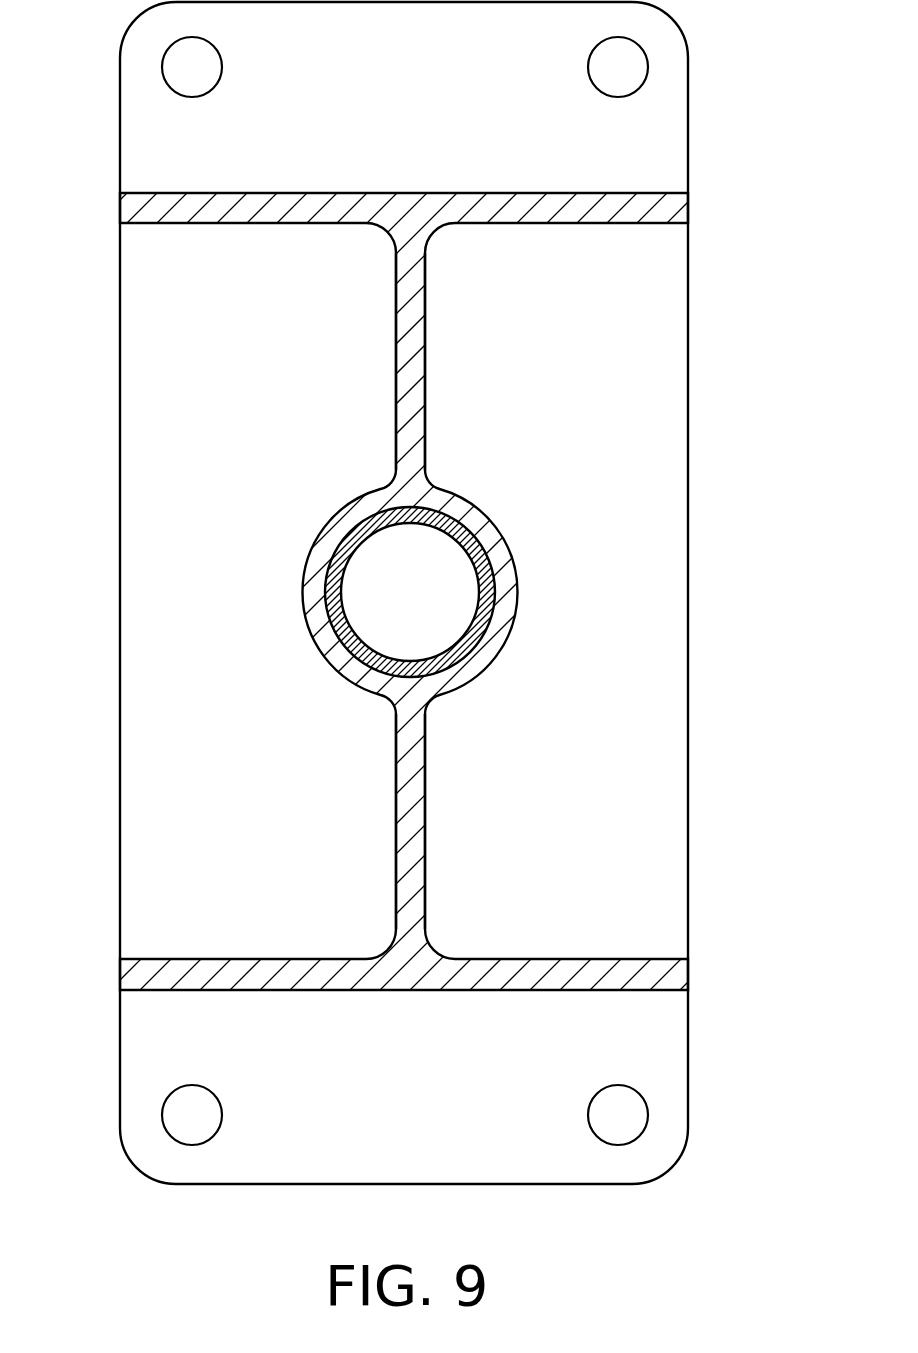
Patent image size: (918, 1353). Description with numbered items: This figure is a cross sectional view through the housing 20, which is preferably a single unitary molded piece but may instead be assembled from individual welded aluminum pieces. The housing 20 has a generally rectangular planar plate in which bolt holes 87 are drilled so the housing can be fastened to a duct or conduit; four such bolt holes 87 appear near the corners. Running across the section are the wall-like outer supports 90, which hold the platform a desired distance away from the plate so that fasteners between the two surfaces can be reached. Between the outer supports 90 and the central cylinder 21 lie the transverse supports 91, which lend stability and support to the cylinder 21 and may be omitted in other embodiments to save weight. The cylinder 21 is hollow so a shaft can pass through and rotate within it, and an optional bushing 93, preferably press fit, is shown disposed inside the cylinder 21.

The housing 20 is at (688, 322).
The cylinder 21 is at (499, 532).
The bolt holes 87 is at (590, 1118).
The outer supports 90 is at (588, 224).
The transverse supports 91 is at (396, 380).
The bushing 93 is at (357, 548).